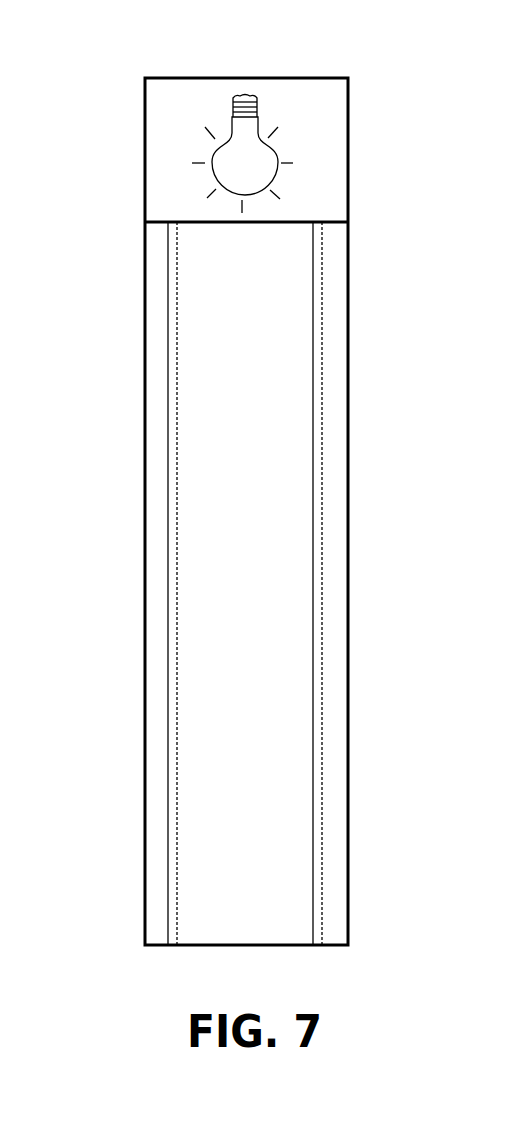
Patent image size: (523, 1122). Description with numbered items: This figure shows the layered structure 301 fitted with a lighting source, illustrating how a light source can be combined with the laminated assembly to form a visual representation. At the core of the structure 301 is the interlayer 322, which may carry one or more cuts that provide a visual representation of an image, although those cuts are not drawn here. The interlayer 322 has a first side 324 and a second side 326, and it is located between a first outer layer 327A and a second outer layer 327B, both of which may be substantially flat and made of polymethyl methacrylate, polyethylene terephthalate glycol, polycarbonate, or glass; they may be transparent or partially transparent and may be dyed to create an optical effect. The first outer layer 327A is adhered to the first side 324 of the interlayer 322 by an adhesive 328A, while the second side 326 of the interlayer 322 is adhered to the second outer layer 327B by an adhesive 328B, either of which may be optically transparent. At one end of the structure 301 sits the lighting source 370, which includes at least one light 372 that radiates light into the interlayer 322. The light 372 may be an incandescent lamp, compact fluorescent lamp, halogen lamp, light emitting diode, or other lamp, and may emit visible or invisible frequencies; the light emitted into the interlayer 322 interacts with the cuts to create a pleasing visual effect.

The structure 301 is at (96, 182).
The lighting source 370 is at (312, 95).
The light 372 is at (275, 149).
The interlayer 322 is at (255, 305).
The first outer layer 327A is at (155, 290).
The second outer layer 327B is at (335, 290).
The adhesive 328A is at (172, 366).
The adhesive 328B is at (317, 366).
The first side 324 is at (178, 473).
The second side 326 is at (312, 473).